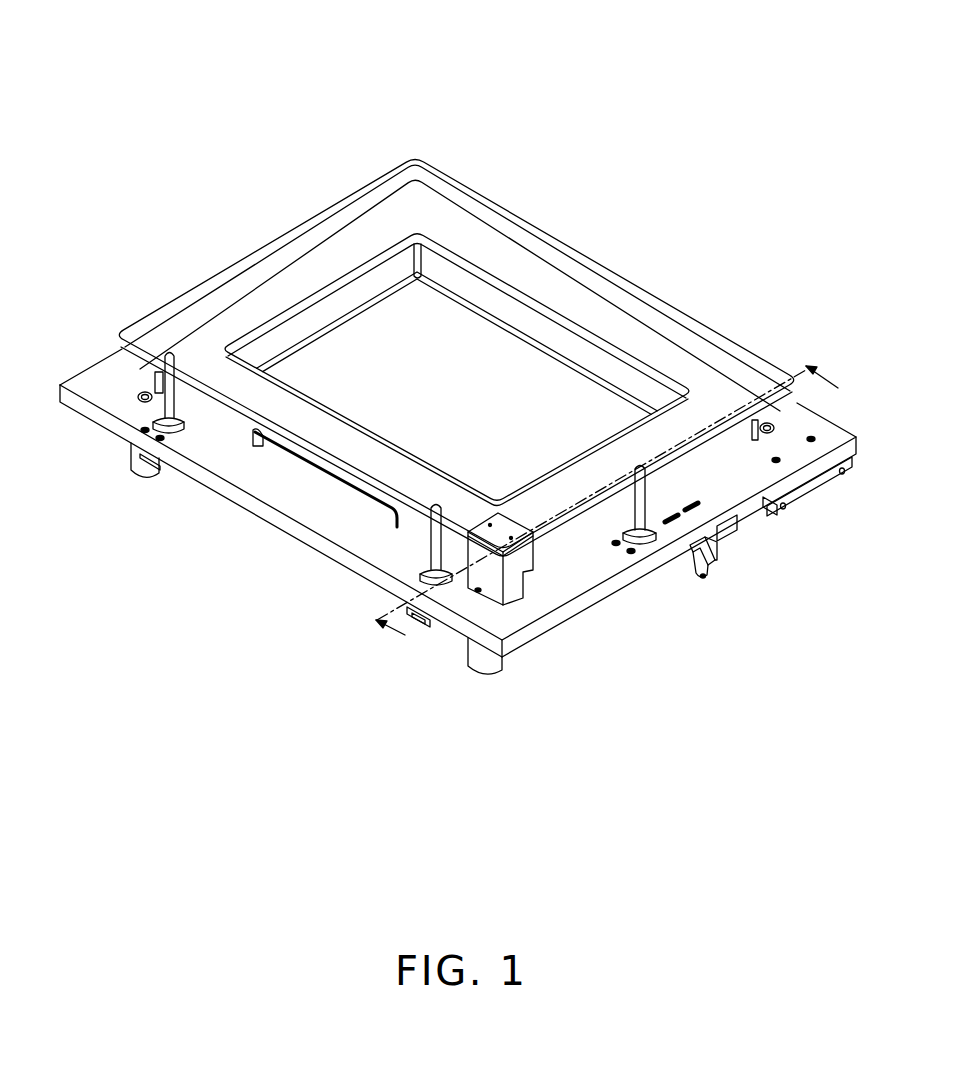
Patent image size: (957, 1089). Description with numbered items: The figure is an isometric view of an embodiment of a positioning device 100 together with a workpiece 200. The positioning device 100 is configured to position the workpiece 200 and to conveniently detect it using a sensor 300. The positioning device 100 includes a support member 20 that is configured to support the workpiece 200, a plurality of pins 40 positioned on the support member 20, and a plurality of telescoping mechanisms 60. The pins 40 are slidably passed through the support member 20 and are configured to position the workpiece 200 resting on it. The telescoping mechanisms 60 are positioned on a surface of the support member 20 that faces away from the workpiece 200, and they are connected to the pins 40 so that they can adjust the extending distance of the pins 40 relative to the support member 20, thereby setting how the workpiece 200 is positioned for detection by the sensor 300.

The positioning device 100 is at (452, 44).
The workpiece 200 is at (465, 226).
The support member 20 is at (553, 586).
The sensor 300 is at (482, 530).
The pins 40 is at (435, 553).
The telescoping mechanisms 60 is at (716, 572).